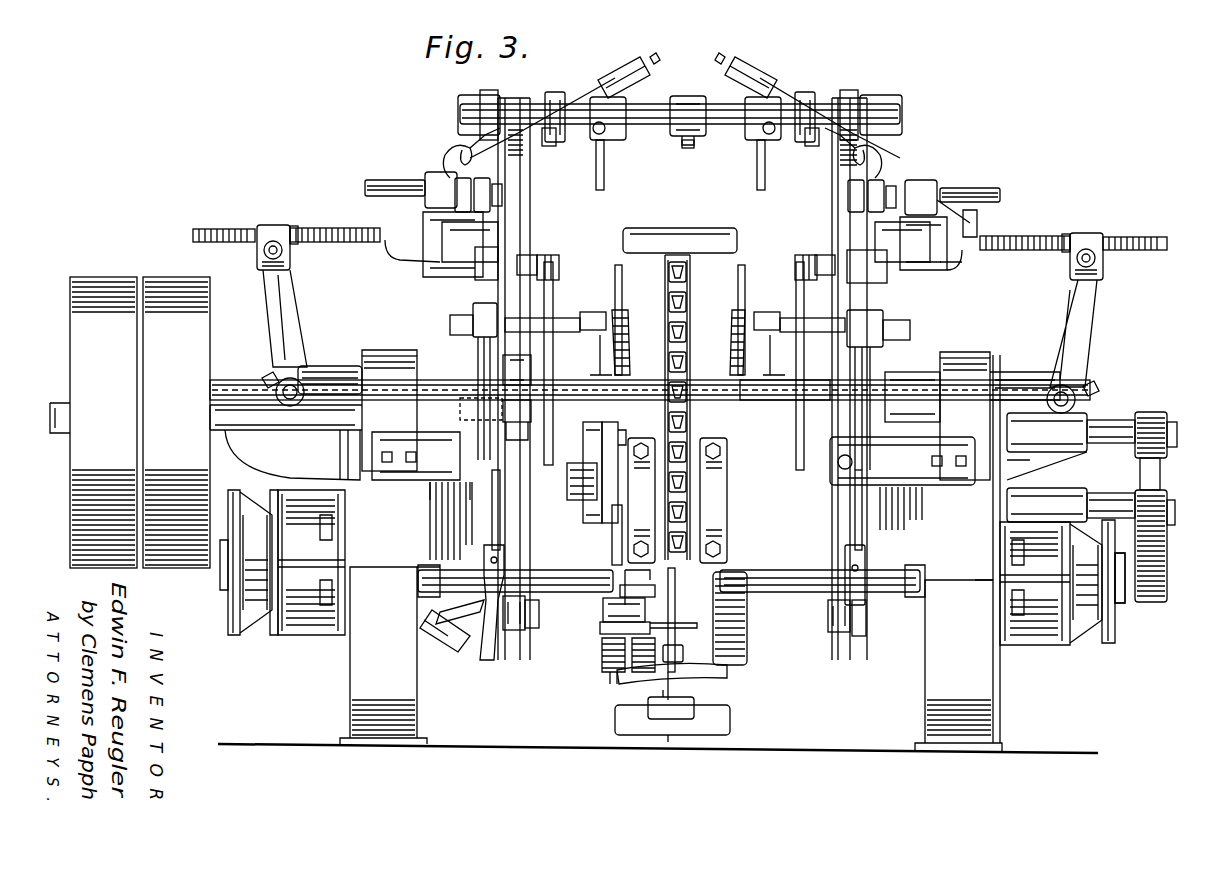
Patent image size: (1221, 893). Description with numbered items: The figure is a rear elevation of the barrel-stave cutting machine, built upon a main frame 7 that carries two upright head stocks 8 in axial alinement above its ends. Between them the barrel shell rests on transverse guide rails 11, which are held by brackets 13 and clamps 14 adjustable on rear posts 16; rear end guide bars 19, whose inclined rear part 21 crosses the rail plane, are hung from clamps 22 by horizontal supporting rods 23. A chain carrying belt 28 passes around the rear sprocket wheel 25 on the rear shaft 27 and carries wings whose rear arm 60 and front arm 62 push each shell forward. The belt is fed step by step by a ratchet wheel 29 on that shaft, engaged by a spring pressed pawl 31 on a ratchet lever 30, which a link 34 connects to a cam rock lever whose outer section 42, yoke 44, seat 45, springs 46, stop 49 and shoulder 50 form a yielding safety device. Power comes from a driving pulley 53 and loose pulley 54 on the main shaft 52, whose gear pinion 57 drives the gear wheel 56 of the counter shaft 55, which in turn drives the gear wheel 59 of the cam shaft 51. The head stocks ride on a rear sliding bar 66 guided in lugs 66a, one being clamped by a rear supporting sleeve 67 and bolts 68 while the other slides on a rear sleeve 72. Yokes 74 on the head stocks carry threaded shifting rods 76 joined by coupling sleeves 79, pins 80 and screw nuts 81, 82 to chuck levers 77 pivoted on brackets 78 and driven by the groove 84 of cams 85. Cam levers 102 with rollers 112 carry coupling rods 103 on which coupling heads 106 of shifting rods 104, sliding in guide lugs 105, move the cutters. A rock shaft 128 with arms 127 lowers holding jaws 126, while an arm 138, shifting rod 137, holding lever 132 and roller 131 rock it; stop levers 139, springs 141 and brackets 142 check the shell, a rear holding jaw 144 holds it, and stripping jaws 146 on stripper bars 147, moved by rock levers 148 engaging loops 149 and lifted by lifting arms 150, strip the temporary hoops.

The main frame 7 is at (783, 496).
The head stock 8 is at (512, 222).
The guide rail 11 is at (610, 312).
The bracket 13 is at (675, 325).
The clamp 14 is at (480, 314).
The rear post 16 is at (478, 346).
The rear end guide bar 19 is at (540, 260).
The rear part of end guide bar 21 is at (544, 452).
The clamp 22 is at (500, 268).
The horizontal supporting rod 23 is at (552, 276).
The rear sprocket wheel 25 is at (692, 398).
The rear shaft 27 is at (728, 480).
The carrying belt 28 is at (660, 398).
The ratchet wheel 29 is at (588, 512).
The ratchet lever 30 is at (567, 480).
The spring pressed pawl 31 is at (592, 430).
The link 34 is at (612, 543).
The outer section 42 is at (605, 630).
The yoke 44 is at (605, 610).
The seat 45 is at (620, 590).
The spring 46 is at (603, 665).
The stop 49 is at (675, 610).
The shoulder 50 is at (630, 572).
The cam shaft 51 is at (1128, 598).
The main shaft 52 is at (760, 400).
The driving pulley 53 is at (93, 422).
The loose pulley 54 is at (176, 422).
The counter shaft 55 is at (1104, 498).
The gear wheel 56 is at (1168, 552).
The gear pinion 57 is at (1152, 412).
The gear wheel 59 is at (747, 638).
The rear arm 60 is at (720, 708).
The front arm 62 is at (650, 702).
The rear sliding bar 66 is at (326, 366).
The rear lug 66a is at (386, 362).
The rear supporting sleeve 67 is at (535, 370).
The bolt 68 is at (528, 432).
The rear sleeve 72 is at (880, 400).
The yoke 74 is at (400, 262).
The shifting rod 76 is at (343, 231).
The chuck lever 77 is at (270, 335).
The bracket 78 is at (272, 390).
The coupling sleeve 79 is at (272, 226).
The transverse pin 80 is at (266, 252).
The screw nut 81 is at (255, 232).
The screw nut 82 is at (296, 228).
The cam groove 84 is at (258, 600).
The cam 85 is at (272, 615).
The cam lever 102 is at (512, 632).
The coupling rod 103 is at (560, 566).
The shifting rod 104 is at (492, 534).
The guide lug 105 is at (500, 408).
The coupling head 106 is at (486, 558).
The roller 112 is at (532, 628).
The holding jaw 126 is at (604, 175).
The rock arm 127 is at (605, 150).
The rock shaft 128 is at (655, 110).
The roller 131 is at (436, 615).
The holding lever 132 is at (452, 640).
The shifting rod 137 is at (496, 512).
The arm 138 is at (512, 108).
The stop lever 139 is at (622, 290).
The spring 141 is at (678, 342).
The bracket 142 is at (682, 355).
The rear holding jaw 144 is at (680, 143).
The stripping jaw 146 is at (610, 78).
The stripper bar 147 is at (556, 100).
The rock lever 148 is at (446, 156).
The loop 149 is at (400, 196).
The lifting arm 150 is at (550, 143).